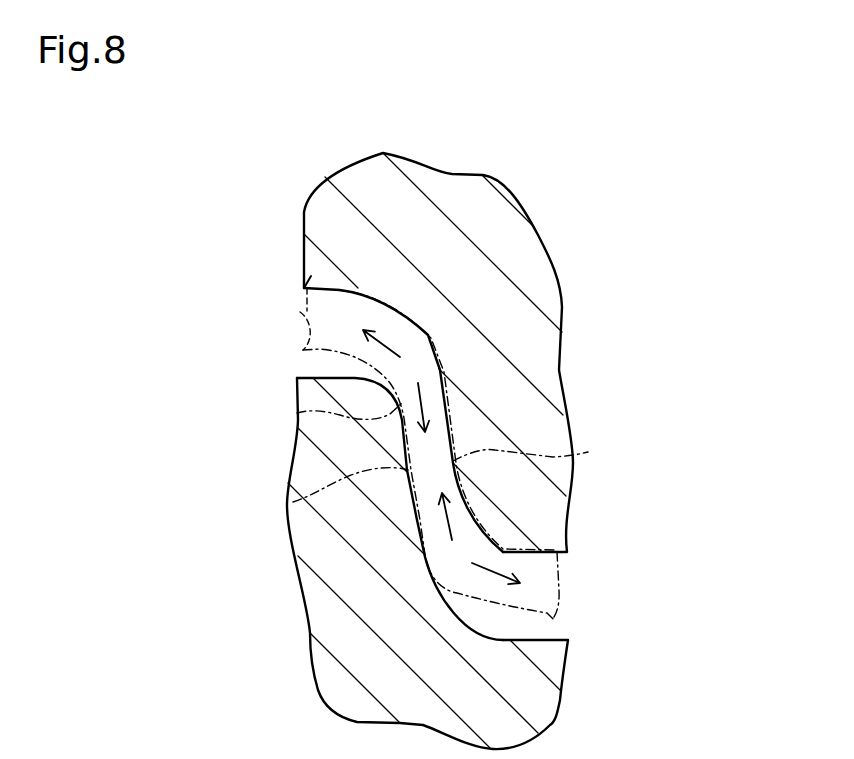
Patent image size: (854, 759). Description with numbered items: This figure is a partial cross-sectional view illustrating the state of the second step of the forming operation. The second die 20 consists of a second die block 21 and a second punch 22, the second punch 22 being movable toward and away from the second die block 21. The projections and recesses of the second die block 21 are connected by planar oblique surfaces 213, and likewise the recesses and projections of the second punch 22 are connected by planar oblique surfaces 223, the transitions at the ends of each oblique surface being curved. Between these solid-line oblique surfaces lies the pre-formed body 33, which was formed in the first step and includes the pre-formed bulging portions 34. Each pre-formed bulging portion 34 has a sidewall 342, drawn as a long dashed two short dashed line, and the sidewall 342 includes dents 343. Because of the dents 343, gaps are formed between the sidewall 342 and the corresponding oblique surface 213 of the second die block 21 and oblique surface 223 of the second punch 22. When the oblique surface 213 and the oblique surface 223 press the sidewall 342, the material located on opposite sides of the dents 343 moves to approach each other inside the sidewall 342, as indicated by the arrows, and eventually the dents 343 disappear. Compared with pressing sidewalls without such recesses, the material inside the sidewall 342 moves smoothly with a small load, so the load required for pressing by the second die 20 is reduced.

The second die 20 is at (654, 530).
The second die block 21 is at (553, 665).
The second punch 22 is at (557, 523).
The pre-formed body 33 is at (300, 313).
The pre-formed bulging portion 34 is at (400, 318).
The oblique surface 213 is at (420, 487).
The oblique surface 223 is at (446, 434).
The sidewall 342 is at (297, 413).
The dent 343 is at (293, 502).